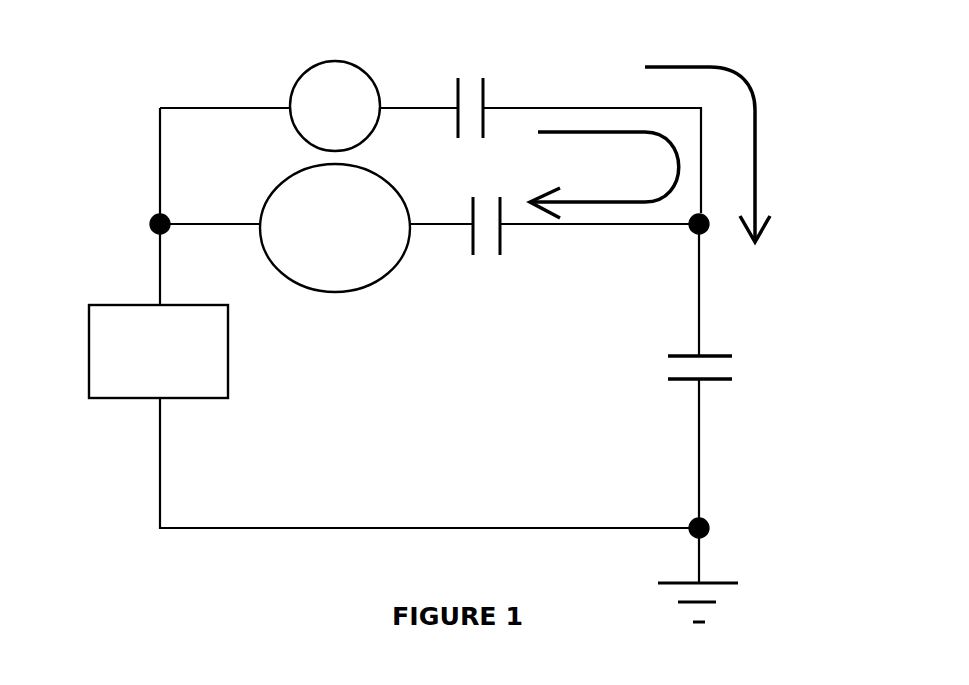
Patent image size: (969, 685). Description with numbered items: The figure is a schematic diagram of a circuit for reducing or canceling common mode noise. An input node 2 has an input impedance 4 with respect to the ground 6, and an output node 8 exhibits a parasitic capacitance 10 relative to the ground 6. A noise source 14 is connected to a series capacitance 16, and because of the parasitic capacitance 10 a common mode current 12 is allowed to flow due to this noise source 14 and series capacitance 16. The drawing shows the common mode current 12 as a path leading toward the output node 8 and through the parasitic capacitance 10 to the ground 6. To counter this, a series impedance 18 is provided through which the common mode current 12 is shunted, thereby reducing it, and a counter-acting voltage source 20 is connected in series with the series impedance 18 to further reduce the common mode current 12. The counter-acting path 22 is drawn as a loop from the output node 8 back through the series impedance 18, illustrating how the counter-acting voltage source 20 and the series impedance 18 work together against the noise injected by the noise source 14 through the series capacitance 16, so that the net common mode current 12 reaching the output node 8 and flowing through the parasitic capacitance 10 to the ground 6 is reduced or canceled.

The input node 2 is at (140, 222).
The input impedance 4 is at (88, 388).
The ground 6 is at (700, 535).
The output node 8 is at (708, 228).
The parasitic capacitance 10 is at (780, 367).
The common mode current 12 is at (787, 187).
The noise source 14 is at (347, 62).
The series capacitance 16 is at (468, 50).
The series impedance 18 is at (520, 247).
The counter-acting voltage source 20 is at (276, 268).
The counter-acting current path 22 is at (627, 175).